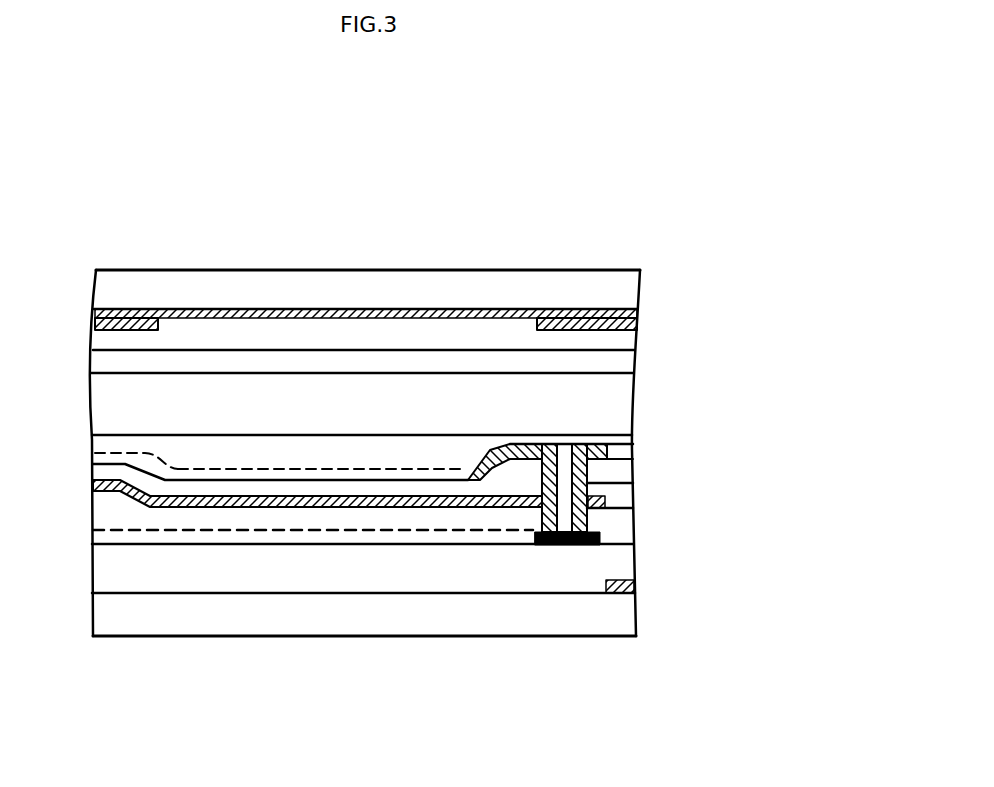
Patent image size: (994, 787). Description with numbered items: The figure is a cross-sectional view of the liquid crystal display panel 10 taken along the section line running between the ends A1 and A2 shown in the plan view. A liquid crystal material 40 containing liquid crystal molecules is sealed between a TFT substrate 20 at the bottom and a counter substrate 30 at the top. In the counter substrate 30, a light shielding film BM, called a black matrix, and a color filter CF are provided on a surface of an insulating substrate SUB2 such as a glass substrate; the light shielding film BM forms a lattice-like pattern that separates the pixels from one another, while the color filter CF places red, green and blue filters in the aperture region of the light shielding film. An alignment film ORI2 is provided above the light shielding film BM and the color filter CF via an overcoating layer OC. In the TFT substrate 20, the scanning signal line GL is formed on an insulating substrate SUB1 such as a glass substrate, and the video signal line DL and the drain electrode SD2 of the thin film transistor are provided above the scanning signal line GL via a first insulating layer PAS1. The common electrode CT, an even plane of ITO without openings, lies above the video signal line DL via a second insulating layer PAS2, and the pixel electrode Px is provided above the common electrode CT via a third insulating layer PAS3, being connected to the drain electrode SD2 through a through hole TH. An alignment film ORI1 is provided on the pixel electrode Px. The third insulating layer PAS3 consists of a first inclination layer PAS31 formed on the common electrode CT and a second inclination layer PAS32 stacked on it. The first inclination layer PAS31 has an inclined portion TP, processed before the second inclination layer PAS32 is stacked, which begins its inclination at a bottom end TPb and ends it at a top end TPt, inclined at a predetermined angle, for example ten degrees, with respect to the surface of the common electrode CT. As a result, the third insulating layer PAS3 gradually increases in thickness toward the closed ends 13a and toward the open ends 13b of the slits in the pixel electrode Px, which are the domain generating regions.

The liquid crystal display panel 10 is at (398, 121).
The counter substrate 30 is at (82, 267).
The liquid crystal material 40 is at (82, 374).
The TFT substrate 20 is at (82, 448).
The insulating substrate SUB2 is at (290, 272).
The color filter CF is at (413, 310).
The light shielding film BM is at (156, 317).
The overcoating layer OC is at (567, 341).
The alignment film ORI2 is at (570, 360).
The alignment film ORI1 is at (570, 438).
The open end 13b is at (98, 452).
The closed end 13a is at (503, 448).
The top end TPt is at (130, 462).
The inclined portion TP is at (150, 485).
The bottom end TPb is at (176, 500).
The pixel electrode Px is at (275, 470).
The common electrode CT is at (330, 495).
The through hole TH is at (557, 508).
The third insulating layer PAS3 is at (457, 520).
The second inclination layer PAS32 is at (600, 470).
The first inclination layer PAS31 is at (617, 485).
The second insulating layer PAS2 is at (605, 520).
The first insulating layer PAS1 is at (570, 557).
The drain electrode SD2 is at (600, 543).
The video signal line DL is at (313, 552).
The insulating substrate SUB1 is at (353, 625).
The scanning signal line GL is at (628, 637).
The section line end A1 is at (96, 657).
The section line end A2 is at (644, 650).